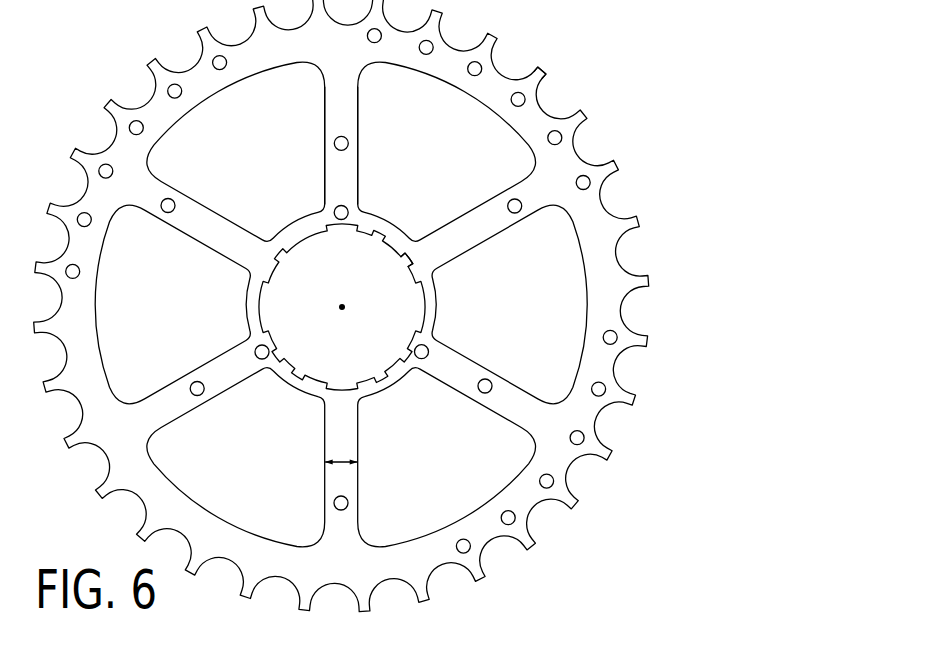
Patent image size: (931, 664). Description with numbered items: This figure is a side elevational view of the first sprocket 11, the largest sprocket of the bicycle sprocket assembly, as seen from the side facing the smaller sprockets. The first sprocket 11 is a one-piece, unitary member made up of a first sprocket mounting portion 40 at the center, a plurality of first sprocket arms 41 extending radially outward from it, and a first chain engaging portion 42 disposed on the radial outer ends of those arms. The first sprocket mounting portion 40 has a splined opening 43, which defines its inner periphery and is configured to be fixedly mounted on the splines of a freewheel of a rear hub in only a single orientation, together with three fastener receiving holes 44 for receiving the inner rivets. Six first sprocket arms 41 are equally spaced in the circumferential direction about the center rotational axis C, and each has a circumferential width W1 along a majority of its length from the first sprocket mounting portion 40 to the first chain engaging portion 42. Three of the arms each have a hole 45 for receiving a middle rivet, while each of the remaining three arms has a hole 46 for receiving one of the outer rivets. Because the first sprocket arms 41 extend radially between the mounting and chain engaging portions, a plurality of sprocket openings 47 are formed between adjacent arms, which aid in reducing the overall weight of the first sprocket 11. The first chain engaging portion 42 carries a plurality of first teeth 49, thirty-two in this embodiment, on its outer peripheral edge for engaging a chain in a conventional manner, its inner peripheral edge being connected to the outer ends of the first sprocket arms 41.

The first sprocket 11 is at (140, 103).
The first sprocket mounting portion 40 is at (377, 220).
The first sprocket arms 41 is at (360, 108).
The first chain engaging portion 42 is at (556, 182).
The splined opening 43 is at (417, 283).
The fastener receiving holes 44 is at (333, 210).
The hole 45 is at (333, 146).
The hole 46 is at (168, 208).
The sprocket openings 47 is at (586, 307).
The first teeth 49 is at (541, 71).
The center rotational axis C is at (341, 307).
The circumferential width W1 is at (343, 461).